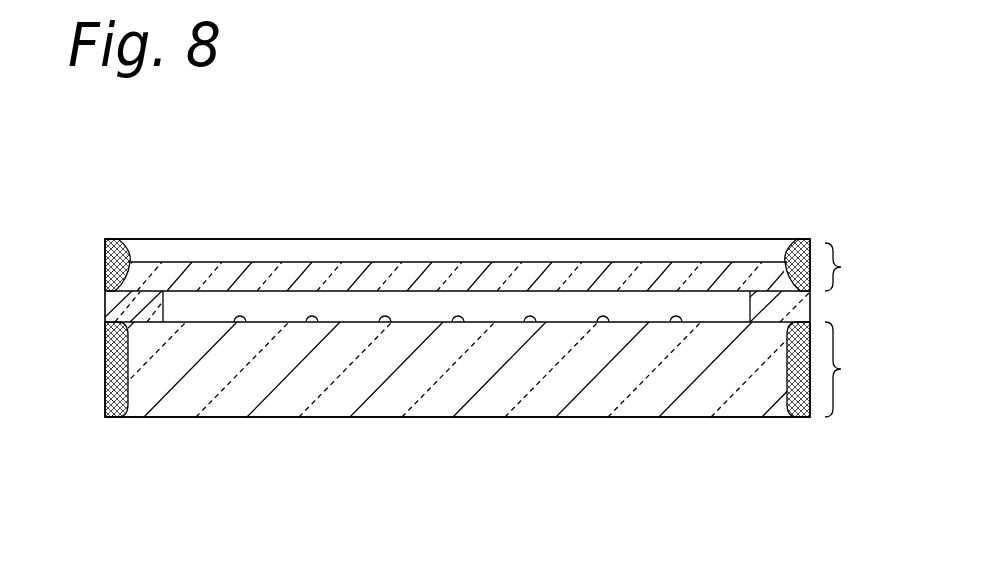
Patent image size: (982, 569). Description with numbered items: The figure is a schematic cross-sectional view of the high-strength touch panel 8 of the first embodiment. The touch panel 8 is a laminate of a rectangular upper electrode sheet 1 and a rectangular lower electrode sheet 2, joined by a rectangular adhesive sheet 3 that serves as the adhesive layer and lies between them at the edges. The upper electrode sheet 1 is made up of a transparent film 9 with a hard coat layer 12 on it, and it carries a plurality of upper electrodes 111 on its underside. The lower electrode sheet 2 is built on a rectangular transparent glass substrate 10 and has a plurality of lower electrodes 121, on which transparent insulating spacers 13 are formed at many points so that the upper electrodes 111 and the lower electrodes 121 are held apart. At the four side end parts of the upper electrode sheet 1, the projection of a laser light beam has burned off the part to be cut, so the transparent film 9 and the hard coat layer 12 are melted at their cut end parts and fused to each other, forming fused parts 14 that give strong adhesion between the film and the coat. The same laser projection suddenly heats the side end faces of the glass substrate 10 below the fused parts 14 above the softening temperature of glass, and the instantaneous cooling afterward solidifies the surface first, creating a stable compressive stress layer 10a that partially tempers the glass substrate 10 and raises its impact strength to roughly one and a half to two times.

The upper electrode sheet 1 is at (847, 267).
The lower electrode sheet 2 is at (846, 369).
The adhesive sheet 3 is at (152, 316).
The touch panel 8 is at (838, 202).
The transparent film 9 is at (547, 280).
The transparent glass substrate 10 is at (510, 382).
The compressive stress layer 10a is at (115, 417).
The hard coat layer 12 is at (297, 240).
The transparent insulating spacer 13 is at (530, 316).
The fused part 14 is at (99, 238).
The upper electrode 111 is at (268, 295).
The lower electrode 121 is at (402, 323).